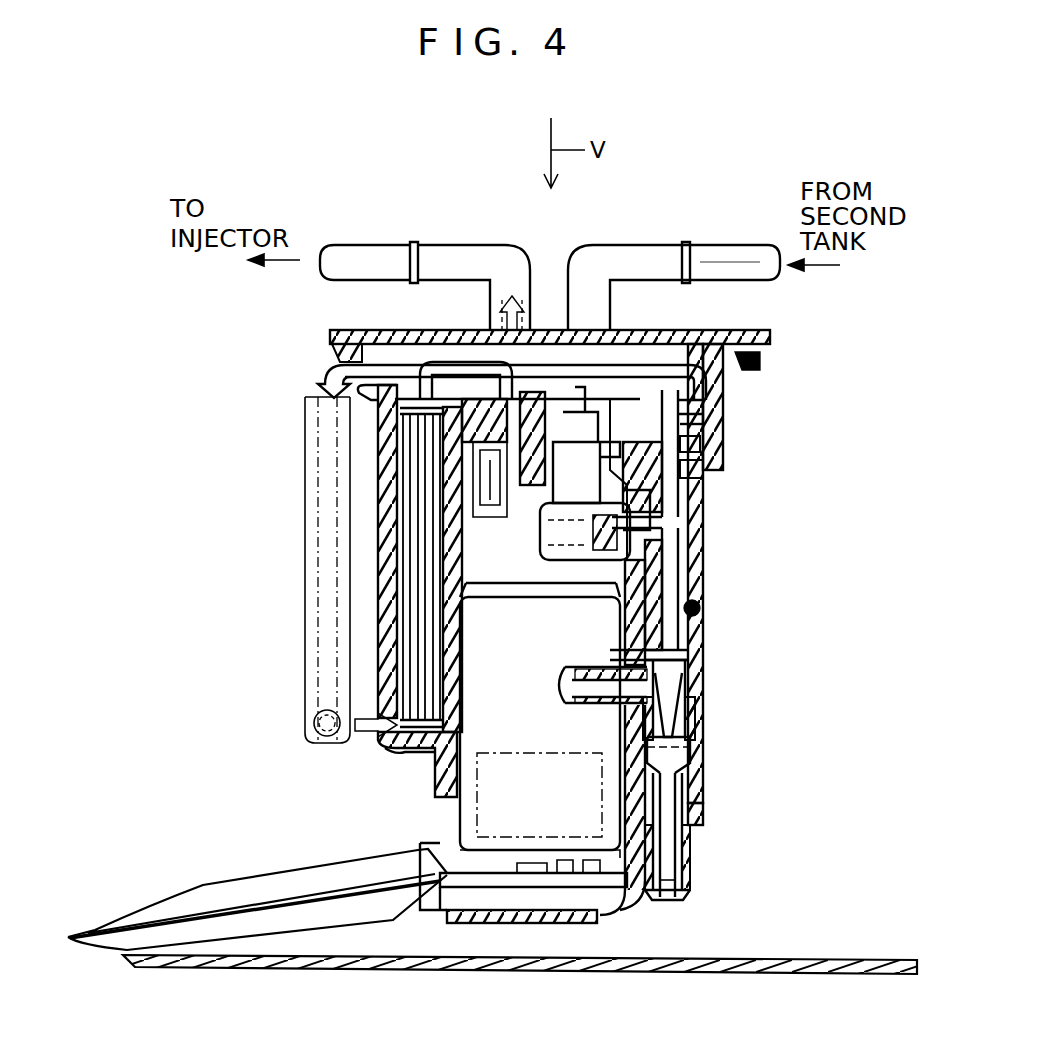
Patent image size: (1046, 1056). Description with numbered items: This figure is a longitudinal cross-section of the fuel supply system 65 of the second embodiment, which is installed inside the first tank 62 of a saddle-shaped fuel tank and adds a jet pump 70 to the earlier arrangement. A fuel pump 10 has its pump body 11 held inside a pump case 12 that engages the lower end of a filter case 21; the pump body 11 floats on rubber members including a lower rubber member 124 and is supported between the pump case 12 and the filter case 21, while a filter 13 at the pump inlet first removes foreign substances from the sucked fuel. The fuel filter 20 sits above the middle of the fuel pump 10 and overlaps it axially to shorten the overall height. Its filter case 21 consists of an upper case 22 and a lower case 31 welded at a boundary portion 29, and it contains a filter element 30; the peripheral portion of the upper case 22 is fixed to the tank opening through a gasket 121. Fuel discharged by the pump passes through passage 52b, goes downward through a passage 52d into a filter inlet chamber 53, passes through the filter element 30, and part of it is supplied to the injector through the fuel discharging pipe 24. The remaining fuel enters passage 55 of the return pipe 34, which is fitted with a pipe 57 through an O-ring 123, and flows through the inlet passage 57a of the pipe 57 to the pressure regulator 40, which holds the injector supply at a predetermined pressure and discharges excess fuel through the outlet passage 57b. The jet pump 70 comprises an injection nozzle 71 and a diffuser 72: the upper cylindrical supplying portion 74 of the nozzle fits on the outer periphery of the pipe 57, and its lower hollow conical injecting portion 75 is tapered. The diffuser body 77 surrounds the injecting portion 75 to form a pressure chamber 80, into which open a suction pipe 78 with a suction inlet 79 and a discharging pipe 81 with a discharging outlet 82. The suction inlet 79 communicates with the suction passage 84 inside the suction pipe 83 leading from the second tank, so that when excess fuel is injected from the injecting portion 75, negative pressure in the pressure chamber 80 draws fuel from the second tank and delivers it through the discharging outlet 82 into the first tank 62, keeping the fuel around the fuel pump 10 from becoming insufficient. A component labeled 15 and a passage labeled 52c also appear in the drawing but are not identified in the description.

The fuel pump 10 is at (500, 718).
The pump body 11 is at (450, 793).
The pump case 12 is at (530, 923).
The filter 13 is at (228, 893).
The pressure regulator 15 is at (590, 445).
The fuel filter 20 is at (366, 481).
The filter case 21 is at (361, 404).
The upper case 22 is at (755, 340).
The fuel discharging pipe 24 is at (372, 262).
The boundary portion 29 is at (715, 415).
The filter element 30 is at (420, 510).
The lower case 31 is at (372, 425).
The return pipe 34 is at (723, 470).
The pressure regulator 40 is at (537, 558).
The passage 52b is at (407, 370).
The return tube 52c is at (330, 612).
The passage 52d is at (322, 722).
The filter inlet chamber 53 is at (383, 745).
The passage 55 is at (715, 425).
The pipe 57 is at (712, 545).
The inlet passage 57a is at (712, 510).
The outlet passage 57b is at (700, 640).
The first tank 62 is at (818, 968).
The fuel supply system 65 is at (441, 233).
The jet pump 70 is at (723, 785).
The injection nozzle 71 is at (688, 670).
The diffuser 72 is at (690, 770).
The upper cylindrical supplying portion 74 is at (700, 608).
The lower hollow conical injecting portion 75 is at (688, 703).
The diffuser body 77 is at (703, 815).
The suction pipe 78 is at (688, 652).
The suction inlet 79 is at (583, 690).
The pressure chamber 80 is at (690, 745).
The discharging pipe 81 is at (680, 878).
The discharging outlet 82 is at (670, 903).
The suction pipe 83 is at (735, 262).
The suction passage 84 is at (745, 272).
The gasket 121 is at (760, 365).
The O-ring 123 is at (720, 440).
The lower rubber member 124 is at (570, 875).